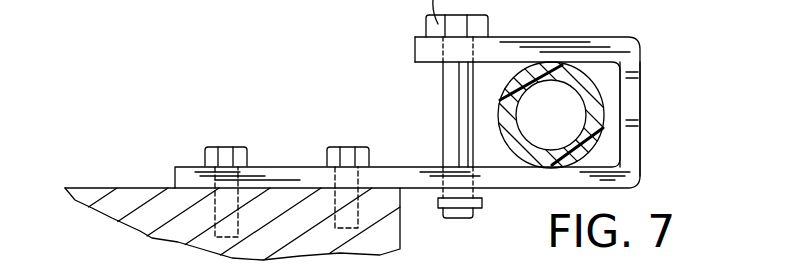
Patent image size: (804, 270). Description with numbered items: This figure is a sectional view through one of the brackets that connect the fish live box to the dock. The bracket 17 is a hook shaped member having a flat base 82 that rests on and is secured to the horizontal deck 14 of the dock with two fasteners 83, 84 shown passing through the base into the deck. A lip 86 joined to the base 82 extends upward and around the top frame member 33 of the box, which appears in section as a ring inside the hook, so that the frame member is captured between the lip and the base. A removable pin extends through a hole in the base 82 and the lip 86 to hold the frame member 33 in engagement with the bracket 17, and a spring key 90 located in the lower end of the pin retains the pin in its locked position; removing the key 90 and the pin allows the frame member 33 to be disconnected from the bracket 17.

The deck 14 is at (85, 197).
The bracket 17 is at (658, 82).
The top frame member 33 is at (605, 133).
The flat base 82 is at (415, 178).
The fastener 83 is at (218, 152).
The fastener 84 is at (343, 152).
The lip 86 is at (543, 45).
The spring key 90 is at (482, 205).